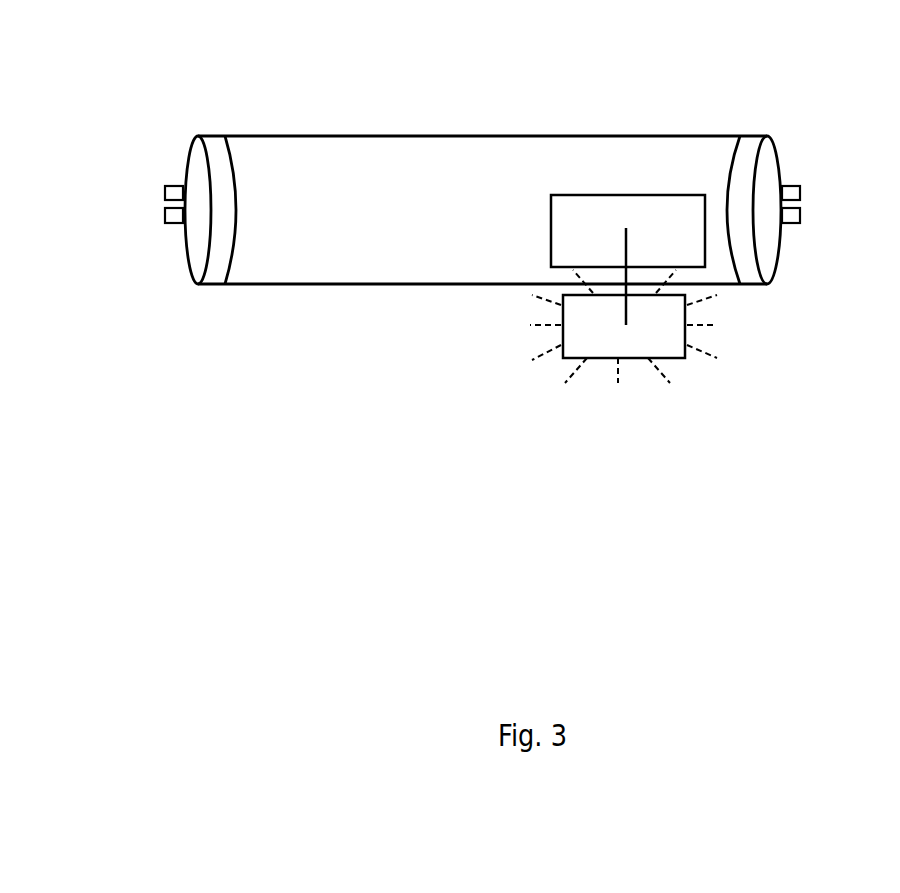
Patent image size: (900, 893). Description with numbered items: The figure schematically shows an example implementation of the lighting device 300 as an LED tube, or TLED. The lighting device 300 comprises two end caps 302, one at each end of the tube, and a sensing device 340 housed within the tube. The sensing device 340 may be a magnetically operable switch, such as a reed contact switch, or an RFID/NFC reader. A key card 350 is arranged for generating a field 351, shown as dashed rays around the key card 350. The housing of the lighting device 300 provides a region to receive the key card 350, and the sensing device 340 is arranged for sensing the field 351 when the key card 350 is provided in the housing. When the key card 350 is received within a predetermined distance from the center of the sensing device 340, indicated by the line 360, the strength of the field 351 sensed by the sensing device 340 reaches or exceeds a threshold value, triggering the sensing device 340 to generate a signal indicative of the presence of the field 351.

The lighting device 300 is at (400, 135).
The end caps 302 is at (180, 183).
The sensing device 340 is at (551, 231).
The line 360 is at (626, 240).
The key card 350 is at (672, 360).
The field 351 is at (530, 325).